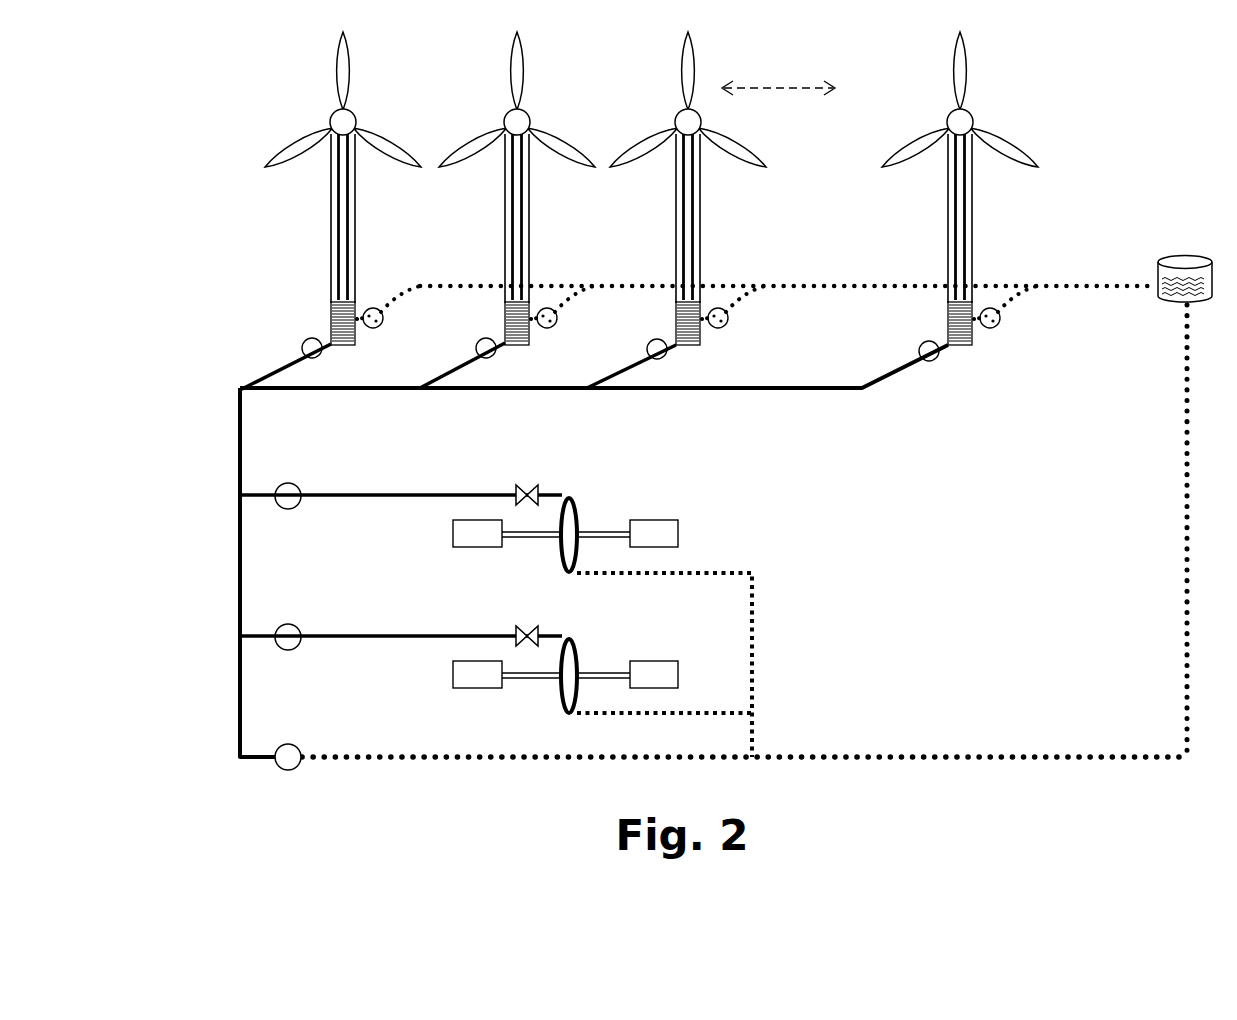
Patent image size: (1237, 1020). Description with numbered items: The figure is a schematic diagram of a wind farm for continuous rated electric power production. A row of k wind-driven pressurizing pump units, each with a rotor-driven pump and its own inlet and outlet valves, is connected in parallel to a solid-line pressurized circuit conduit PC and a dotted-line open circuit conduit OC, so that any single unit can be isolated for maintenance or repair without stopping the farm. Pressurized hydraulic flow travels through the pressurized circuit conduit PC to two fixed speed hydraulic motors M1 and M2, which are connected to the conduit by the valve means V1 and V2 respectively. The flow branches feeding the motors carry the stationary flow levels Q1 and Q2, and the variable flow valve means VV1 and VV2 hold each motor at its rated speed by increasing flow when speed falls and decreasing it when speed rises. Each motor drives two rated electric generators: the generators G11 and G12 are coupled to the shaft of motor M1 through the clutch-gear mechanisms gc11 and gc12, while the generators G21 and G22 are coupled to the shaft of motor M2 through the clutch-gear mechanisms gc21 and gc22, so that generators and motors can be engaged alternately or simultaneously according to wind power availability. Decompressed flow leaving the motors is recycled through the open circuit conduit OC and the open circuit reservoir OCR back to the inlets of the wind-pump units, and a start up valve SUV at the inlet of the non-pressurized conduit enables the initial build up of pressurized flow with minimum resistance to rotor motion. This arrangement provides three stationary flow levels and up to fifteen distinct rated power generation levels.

The pressurized circuit conduit PC is at (218, 472).
The open circuit conduit OC is at (808, 271).
The open circuit reservoir OCR is at (1185, 265).
The valve means V1 is at (288, 485).
The valve means V2 is at (288, 626).
The stationary hydraulic flow level Q1 is at (496, 611).
The stationary hydraulic flow level Q2 is at (496, 660).
The variable flow valve means VV1 is at (526, 484).
The variable flow valve means VV2 is at (526, 625).
The fixed speed hydraulic motor M1 is at (591, 531).
The fixed speed hydraulic motor M2 is at (591, 672).
The rated electric generator G11 is at (477, 533).
The rated electric generator G12 is at (654, 533).
The rated electric generator G21 is at (477, 674).
The rated electric generator G22 is at (654, 674).
The clutch-gear mechanism means gc11 is at (531, 545).
The clutch-gear mechanism means gc12 is at (603, 545).
The clutch-gear mechanism means gc21 is at (531, 686).
The clutch-gear mechanism means gc22 is at (603, 686).
The start up valve SUV is at (289, 744).